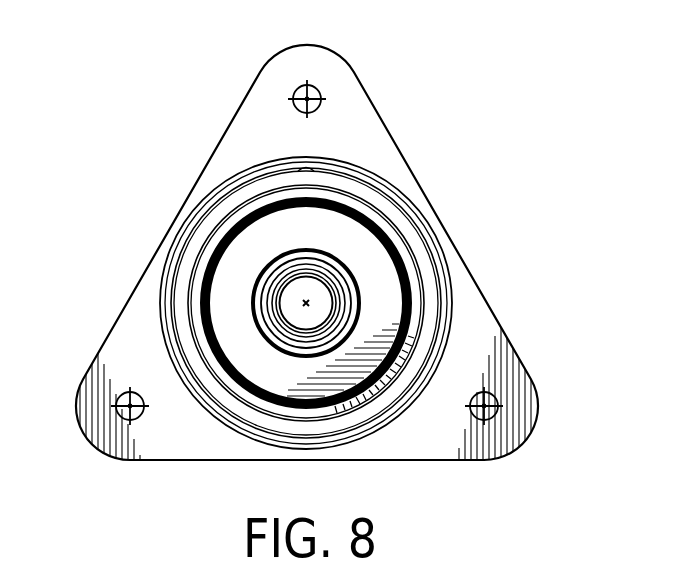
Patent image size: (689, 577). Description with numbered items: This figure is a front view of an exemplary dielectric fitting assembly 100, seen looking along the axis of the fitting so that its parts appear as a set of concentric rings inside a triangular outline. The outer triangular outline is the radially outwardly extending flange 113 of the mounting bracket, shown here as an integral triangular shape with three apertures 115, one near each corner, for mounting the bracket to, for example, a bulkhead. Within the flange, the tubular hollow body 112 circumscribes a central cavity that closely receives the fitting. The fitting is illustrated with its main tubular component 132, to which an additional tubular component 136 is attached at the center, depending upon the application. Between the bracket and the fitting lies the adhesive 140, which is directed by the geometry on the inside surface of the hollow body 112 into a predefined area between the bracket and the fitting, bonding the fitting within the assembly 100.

The fitting assembly 100 is at (118, 116).
The hollow body 112 is at (393, 200).
The flange 113 is at (365, 115).
The apertures 115 is at (306, 85).
The main tubular component 132 is at (383, 325).
The tubular component 136 is at (325, 302).
The adhesive 140 is at (218, 253).